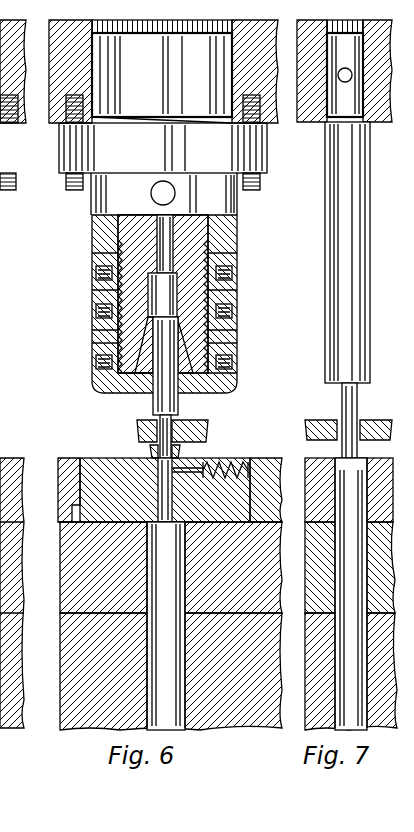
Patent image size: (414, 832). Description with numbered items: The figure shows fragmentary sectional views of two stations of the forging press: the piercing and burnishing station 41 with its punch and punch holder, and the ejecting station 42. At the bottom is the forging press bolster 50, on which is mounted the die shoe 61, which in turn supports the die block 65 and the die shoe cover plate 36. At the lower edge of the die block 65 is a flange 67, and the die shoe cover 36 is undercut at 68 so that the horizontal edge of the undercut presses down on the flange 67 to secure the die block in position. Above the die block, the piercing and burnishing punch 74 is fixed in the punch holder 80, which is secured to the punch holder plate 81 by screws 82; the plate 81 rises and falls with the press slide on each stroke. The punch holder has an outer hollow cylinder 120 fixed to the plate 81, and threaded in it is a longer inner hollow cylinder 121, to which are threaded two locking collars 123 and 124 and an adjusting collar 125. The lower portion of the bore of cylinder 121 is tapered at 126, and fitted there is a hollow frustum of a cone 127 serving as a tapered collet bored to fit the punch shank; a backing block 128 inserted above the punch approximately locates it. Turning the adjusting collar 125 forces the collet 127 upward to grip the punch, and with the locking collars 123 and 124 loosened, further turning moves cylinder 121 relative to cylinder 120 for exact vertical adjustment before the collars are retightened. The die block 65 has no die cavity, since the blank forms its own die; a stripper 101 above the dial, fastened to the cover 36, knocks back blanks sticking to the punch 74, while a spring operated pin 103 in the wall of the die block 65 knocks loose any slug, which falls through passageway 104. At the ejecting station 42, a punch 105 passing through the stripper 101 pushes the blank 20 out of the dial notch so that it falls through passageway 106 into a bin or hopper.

In FIG. 6, the blank 20 is at (158, 470).
In FIG. 6, the die shoe cover plate 36 is at (264, 462).
In FIG. 6, the piercing and burnishing station 41 is at (148, 447).
In FIG. 7, the ejecting station 42 is at (366, 412).
In FIG. 6, the forging press bolster 50 is at (62, 670).
In FIG. 7, the forging press bolster 50 is at (312, 670).
In FIG. 6, the die shoe 61 is at (62, 568).
In FIG. 7, the die shoe 61 is at (314, 566).
In FIG. 6, the die block 65 is at (100, 466).
In FIG. 6, the flange 67 is at (64, 546).
In FIG. 6, the undercut 68 is at (76, 506).
In FIG. 6, the piercing and burnishing punch 74 is at (163, 404).
In FIG. 6, the punch holder 80 is at (95, 397).
In FIG. 7, the punch holder plate 81 is at (276, 110).
In FIG. 6, the screws 82 is at (70, 190).
In FIG. 6, the stripper 101 is at (192, 420).
In FIG. 7, the stripper 101 is at (318, 424).
In FIG. 6, the spring operated pin 103 is at (242, 466).
In FIG. 6, the passageway 104 is at (181, 576).
In FIG. 7, the punch 105 is at (343, 402).
In FIG. 7, the passageway 106 is at (359, 556).
In FIG. 6, the outer hollow cylinder 120 is at (128, 236).
In FIG. 6, the inner hollow cylinder 121 is at (95, 247).
In FIG. 6, the locking collar 123 is at (44, 288).
In FIG. 6, the locking collar 124 is at (50, 308).
In FIG. 6, the adjusting collar 125 is at (54, 368).
In FIG. 6, the tapered bore portion 126 is at (145, 345).
In FIG. 6, the tapered collet 127 is at (212, 346).
In FIG. 6, the backing block 128 is at (178, 289).